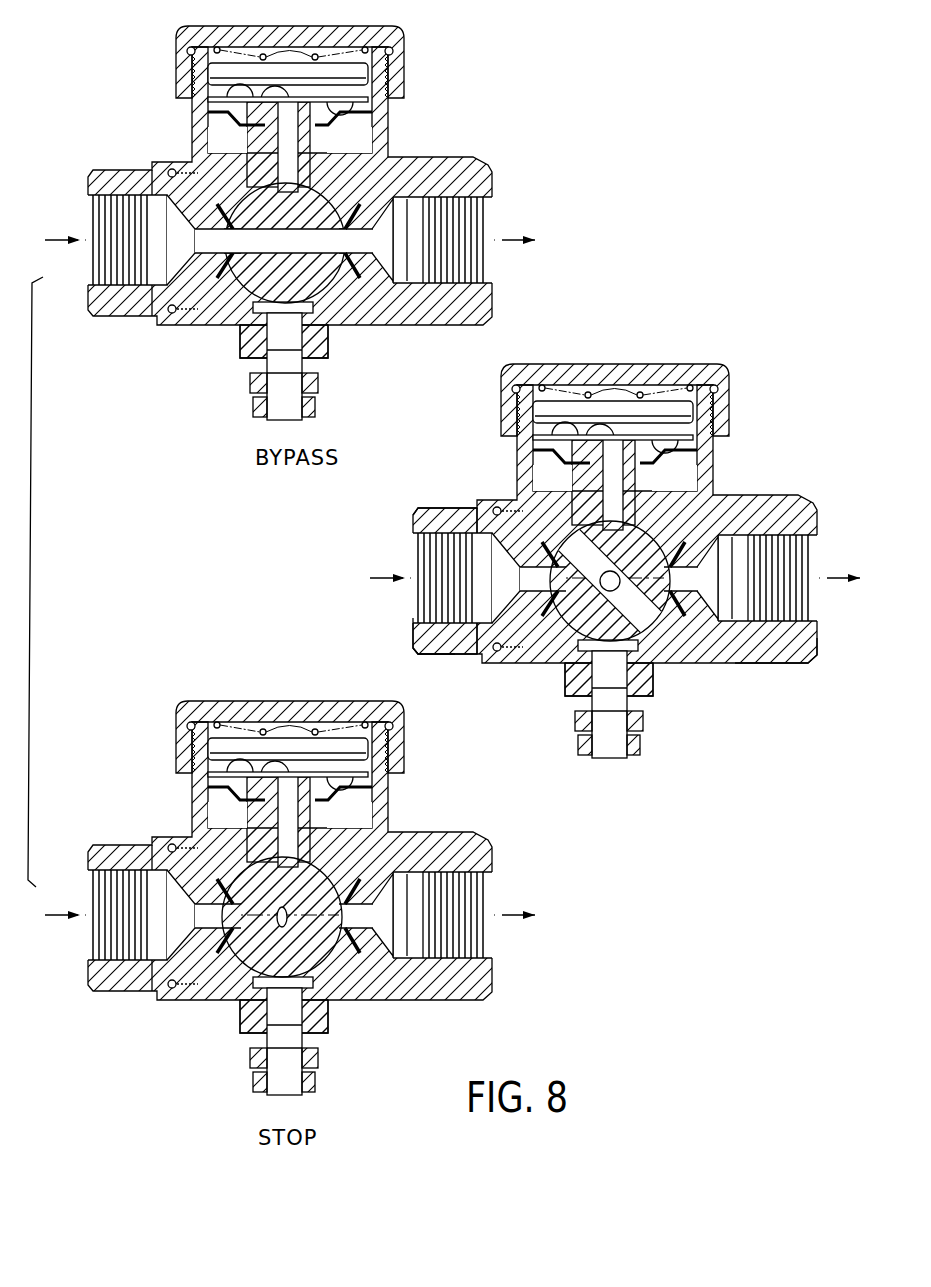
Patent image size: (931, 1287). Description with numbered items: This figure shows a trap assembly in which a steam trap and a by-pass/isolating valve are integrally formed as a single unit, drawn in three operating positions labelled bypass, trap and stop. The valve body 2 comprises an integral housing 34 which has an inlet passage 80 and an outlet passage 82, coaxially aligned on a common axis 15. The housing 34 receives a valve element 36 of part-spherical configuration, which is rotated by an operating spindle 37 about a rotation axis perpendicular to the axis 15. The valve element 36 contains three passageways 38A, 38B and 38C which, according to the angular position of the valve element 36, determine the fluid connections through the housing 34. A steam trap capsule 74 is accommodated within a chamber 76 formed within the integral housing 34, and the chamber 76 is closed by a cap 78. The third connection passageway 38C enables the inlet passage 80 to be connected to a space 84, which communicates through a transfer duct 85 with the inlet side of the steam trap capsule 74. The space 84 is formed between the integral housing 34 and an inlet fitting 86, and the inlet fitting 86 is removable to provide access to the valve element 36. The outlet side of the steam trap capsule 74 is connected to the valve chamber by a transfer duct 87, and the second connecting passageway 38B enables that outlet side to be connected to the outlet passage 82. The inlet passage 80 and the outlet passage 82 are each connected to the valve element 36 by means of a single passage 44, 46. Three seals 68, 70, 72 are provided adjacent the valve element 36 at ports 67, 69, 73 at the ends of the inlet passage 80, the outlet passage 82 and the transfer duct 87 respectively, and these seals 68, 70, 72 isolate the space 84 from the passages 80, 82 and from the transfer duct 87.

The valve body 2 is at (615, 577).
The axis 15 is at (441, 578).
The housing 34 is at (754, 506).
The valve element 36 is at (662, 646).
The operating spindle 37 is at (604, 746).
The first passageway 38A is at (566, 649).
The second connecting passageway 38B is at (670, 590).
The third connection passageway 38C is at (533, 590).
The single passage 44 is at (482, 636).
The single passage 46 is at (700, 592).
The port 67 is at (230, 940).
The seal 68 is at (210, 955).
The port 69 is at (358, 250).
The seal 70 is at (333, 275).
The seal 72 is at (300, 185).
The port 73 is at (352, 235).
The steam trap capsule 74 is at (660, 418).
The chamber 76 is at (690, 486).
The cap 78 is at (537, 373).
The inlet passage 80 is at (436, 621).
The outlet passage 82 is at (790, 640).
The space 84 is at (545, 522).
The transfer duct 85 is at (548, 505).
The inlet fitting 86 is at (437, 640).
The transfer duct 87 is at (640, 470).